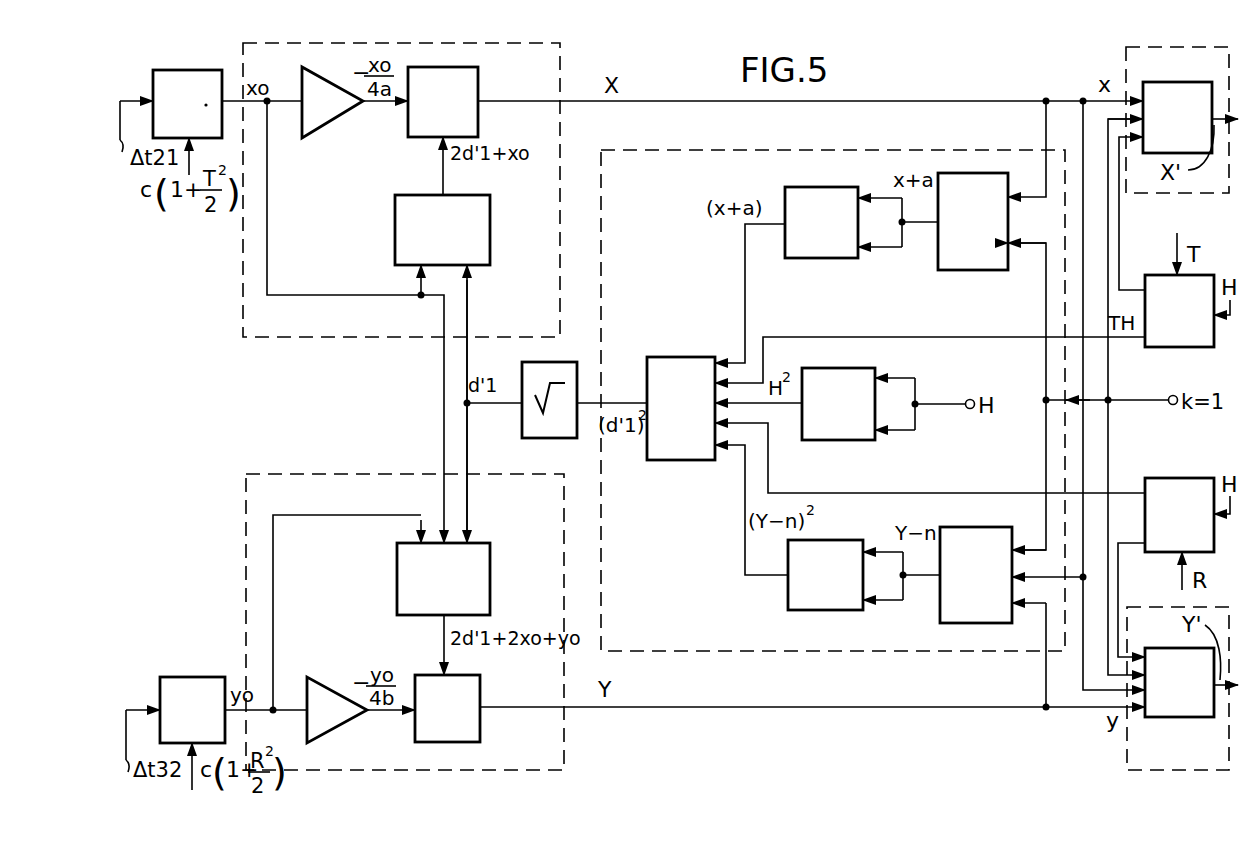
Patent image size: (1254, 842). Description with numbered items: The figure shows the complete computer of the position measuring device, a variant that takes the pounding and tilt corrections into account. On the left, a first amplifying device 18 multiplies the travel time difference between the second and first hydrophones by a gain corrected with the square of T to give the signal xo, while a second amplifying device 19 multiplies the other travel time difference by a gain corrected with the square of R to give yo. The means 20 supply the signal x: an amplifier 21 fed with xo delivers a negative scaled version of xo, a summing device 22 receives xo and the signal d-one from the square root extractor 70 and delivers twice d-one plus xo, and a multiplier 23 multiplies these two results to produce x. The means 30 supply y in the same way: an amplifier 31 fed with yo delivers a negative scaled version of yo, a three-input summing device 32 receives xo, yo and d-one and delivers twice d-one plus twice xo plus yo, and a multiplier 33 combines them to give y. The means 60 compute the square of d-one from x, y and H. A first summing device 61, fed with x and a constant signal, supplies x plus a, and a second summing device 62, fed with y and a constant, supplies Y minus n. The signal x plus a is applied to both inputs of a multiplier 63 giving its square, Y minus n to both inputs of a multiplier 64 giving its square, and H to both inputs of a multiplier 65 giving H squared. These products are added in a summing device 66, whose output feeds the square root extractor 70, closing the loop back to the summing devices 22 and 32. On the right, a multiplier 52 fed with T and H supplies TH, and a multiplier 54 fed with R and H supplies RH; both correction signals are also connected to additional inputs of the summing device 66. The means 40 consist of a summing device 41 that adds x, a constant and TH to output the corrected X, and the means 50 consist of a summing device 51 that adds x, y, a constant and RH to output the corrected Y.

The first amplifying device 18 is at (170, 100).
The second amplifying device 19 is at (182, 690).
The means supplying x 20 is at (252, 278).
The amplifier 21 is at (313, 108).
The summing device 22 is at (487, 232).
The multiplier 23 is at (472, 97).
The means supplying y 30 is at (250, 518).
The amplifier 31 is at (325, 697).
The summing device 32 is at (400, 600).
The multiplier 33 is at (468, 715).
The means supplying X 40 is at (1124, 72).
The summing device 41 is at (1166, 92).
The means supplying Y 50 is at (1135, 732).
The summing device 51 is at (1180, 712).
The multiplier 52 is at (1210, 350).
The multiplier 54 is at (1205, 488).
The means supplying d1² 60 is at (680, 648).
The first summing device 61 is at (983, 245).
The second summing device 62 is at (968, 607).
The multiplier 63 is at (798, 236).
The multiplier 64 is at (820, 595).
The multiplier 65 is at (862, 380).
The summing device 66 is at (672, 380).
The square root extractor 70 is at (536, 395).